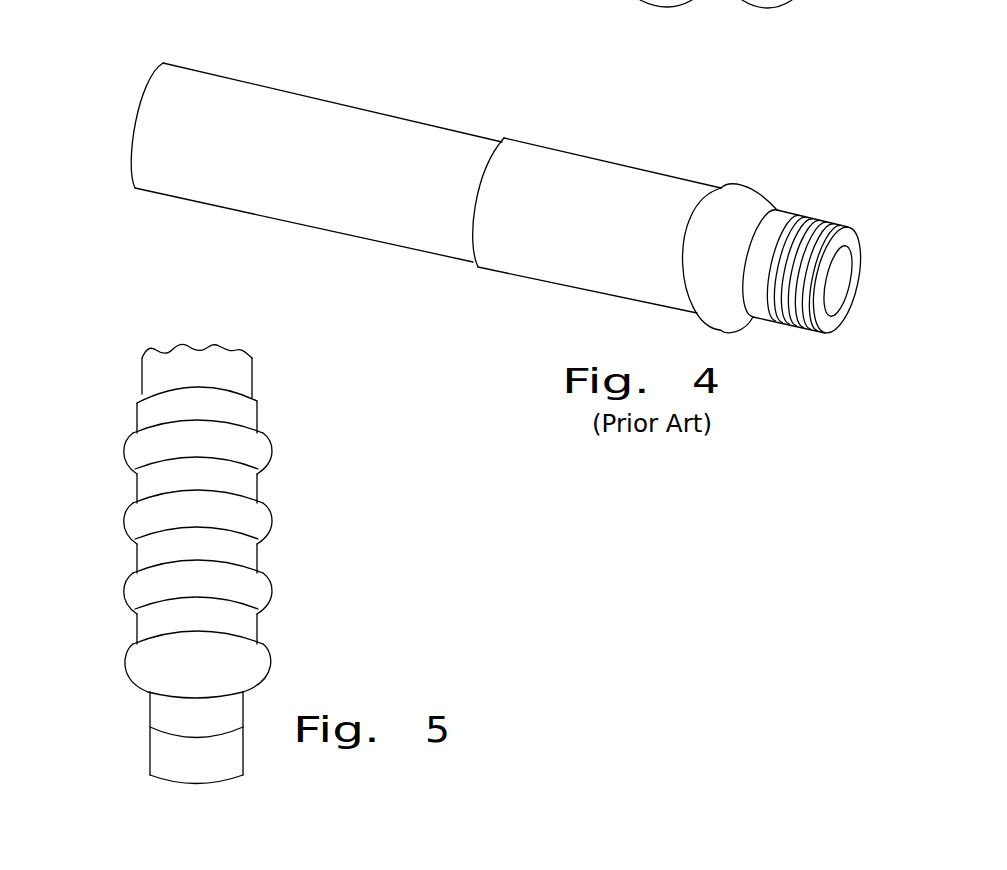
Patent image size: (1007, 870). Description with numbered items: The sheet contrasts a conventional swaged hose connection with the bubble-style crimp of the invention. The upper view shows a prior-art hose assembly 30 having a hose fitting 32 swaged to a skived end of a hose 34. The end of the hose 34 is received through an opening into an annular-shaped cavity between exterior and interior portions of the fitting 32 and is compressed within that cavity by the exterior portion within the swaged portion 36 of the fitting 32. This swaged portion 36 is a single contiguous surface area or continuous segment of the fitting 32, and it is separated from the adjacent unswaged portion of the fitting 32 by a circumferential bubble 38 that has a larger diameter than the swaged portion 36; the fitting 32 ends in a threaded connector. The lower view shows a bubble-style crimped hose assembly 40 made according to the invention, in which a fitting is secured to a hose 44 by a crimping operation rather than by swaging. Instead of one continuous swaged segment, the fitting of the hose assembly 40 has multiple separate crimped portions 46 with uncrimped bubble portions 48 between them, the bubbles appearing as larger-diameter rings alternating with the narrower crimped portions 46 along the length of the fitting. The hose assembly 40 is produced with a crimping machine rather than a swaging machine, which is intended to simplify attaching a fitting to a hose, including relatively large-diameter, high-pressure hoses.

In FIG. 4, the hose assembly 30 is at (433, 82).
In FIG. 4, the hose fitting 32 is at (659, 172).
In FIG. 4, the hose 34 is at (267, 88).
In FIG. 4, the swaged portion 36 is at (580, 155).
In FIG. 4, the circumferential bubble 38 is at (757, 190).
In FIG. 5, the bubble-style crimped hose assembly 40 is at (310, 447).
In FIG. 5, the hose 44 is at (257, 378).
In FIG. 5, the crimped portions 46 is at (132, 423).
In FIG. 5, the uncrimped bubble portions 48 is at (265, 462).